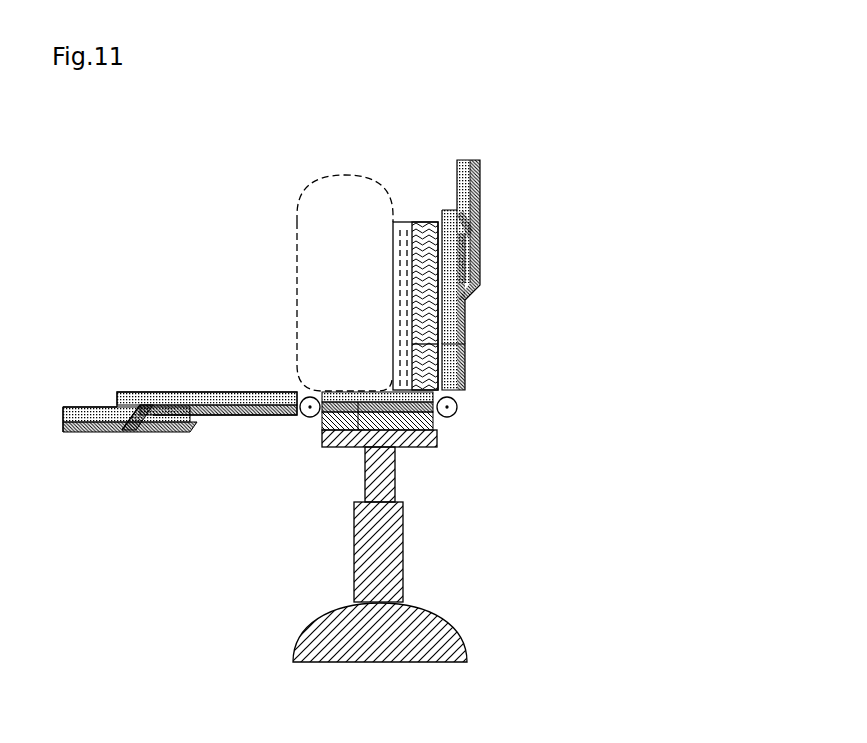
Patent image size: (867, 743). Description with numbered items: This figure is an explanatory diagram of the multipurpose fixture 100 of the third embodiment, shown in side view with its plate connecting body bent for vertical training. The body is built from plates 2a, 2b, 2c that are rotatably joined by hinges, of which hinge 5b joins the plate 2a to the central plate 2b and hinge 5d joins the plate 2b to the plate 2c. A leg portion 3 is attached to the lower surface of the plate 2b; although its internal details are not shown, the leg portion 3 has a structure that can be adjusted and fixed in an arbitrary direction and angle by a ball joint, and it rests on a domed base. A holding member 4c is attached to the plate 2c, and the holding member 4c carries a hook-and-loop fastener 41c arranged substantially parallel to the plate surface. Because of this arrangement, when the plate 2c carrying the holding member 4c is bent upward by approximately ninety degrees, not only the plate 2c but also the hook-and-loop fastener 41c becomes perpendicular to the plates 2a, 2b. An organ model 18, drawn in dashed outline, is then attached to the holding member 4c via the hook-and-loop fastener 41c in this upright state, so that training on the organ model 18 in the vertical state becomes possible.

The multipurpose fixture 100 is at (607, 247).
The plate 2a is at (200, 392).
The plate 2b is at (348, 453).
The plate 2c is at (467, 312).
The leg portion 3 is at (380, 567).
The holding member 4c is at (467, 348).
The hinge 5b is at (308, 416).
The hinge 5d is at (453, 414).
The organ model 18 is at (297, 245).
The hook-and-loop fastener 41c is at (400, 223).